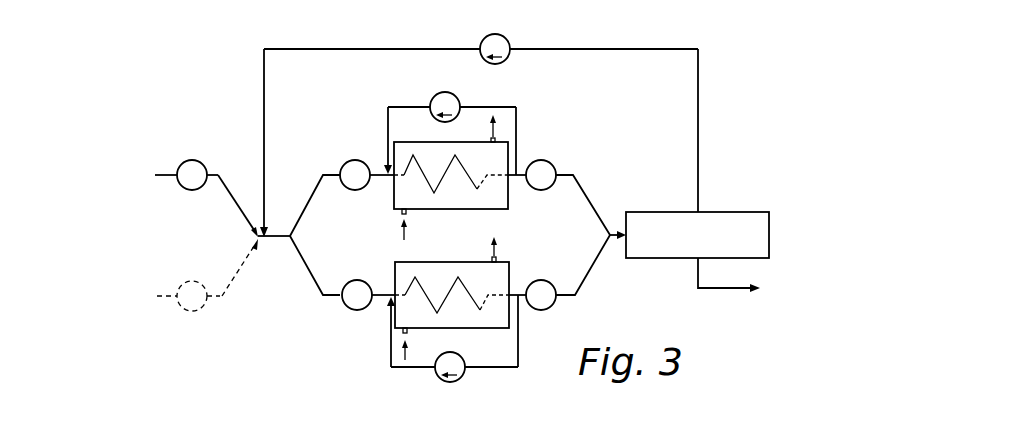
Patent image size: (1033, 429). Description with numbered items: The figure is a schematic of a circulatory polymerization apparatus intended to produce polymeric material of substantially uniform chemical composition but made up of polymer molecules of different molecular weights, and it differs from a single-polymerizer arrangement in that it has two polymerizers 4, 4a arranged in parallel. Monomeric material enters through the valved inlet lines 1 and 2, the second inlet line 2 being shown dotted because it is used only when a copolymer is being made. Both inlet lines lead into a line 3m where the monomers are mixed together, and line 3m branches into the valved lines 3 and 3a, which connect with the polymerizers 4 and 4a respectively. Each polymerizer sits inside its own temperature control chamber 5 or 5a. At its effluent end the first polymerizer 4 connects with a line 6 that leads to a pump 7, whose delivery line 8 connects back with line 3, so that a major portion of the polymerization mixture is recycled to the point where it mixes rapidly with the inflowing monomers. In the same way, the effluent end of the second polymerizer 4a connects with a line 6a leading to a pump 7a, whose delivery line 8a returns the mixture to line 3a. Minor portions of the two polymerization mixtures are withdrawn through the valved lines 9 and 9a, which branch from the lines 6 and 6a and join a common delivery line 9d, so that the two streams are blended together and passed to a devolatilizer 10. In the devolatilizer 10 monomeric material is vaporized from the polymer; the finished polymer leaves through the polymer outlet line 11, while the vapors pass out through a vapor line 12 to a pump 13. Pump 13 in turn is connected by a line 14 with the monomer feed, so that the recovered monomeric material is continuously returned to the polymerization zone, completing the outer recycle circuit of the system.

The valved inlet line 1 is at (162, 172).
The valved inlet line 2 is at (160, 298).
The valved line 3 is at (378, 170).
The valved line 3a is at (380, 297).
The line 3m is at (277, 240).
The polymerizer 4 is at (477, 189).
The polymerizer 4a is at (441, 302).
The temperature control chamber 5 is at (418, 142).
The temperature control chamber 5a is at (427, 262).
The line 6 is at (503, 107).
The line 6a is at (514, 355).
The pump 7 is at (462, 102).
The pump 7a is at (456, 383).
The delivery line 8 is at (415, 107).
The delivery line 8a is at (420, 368).
The valved line 9 is at (522, 172).
The valved line 9a is at (519, 298).
The delivery line 9d is at (612, 238).
The devolatilizer 10 is at (729, 212).
The polymer outlet line 11 is at (697, 282).
The vapor line 12 is at (699, 134).
The pump 13 is at (508, 38).
The line 14 is at (347, 49).